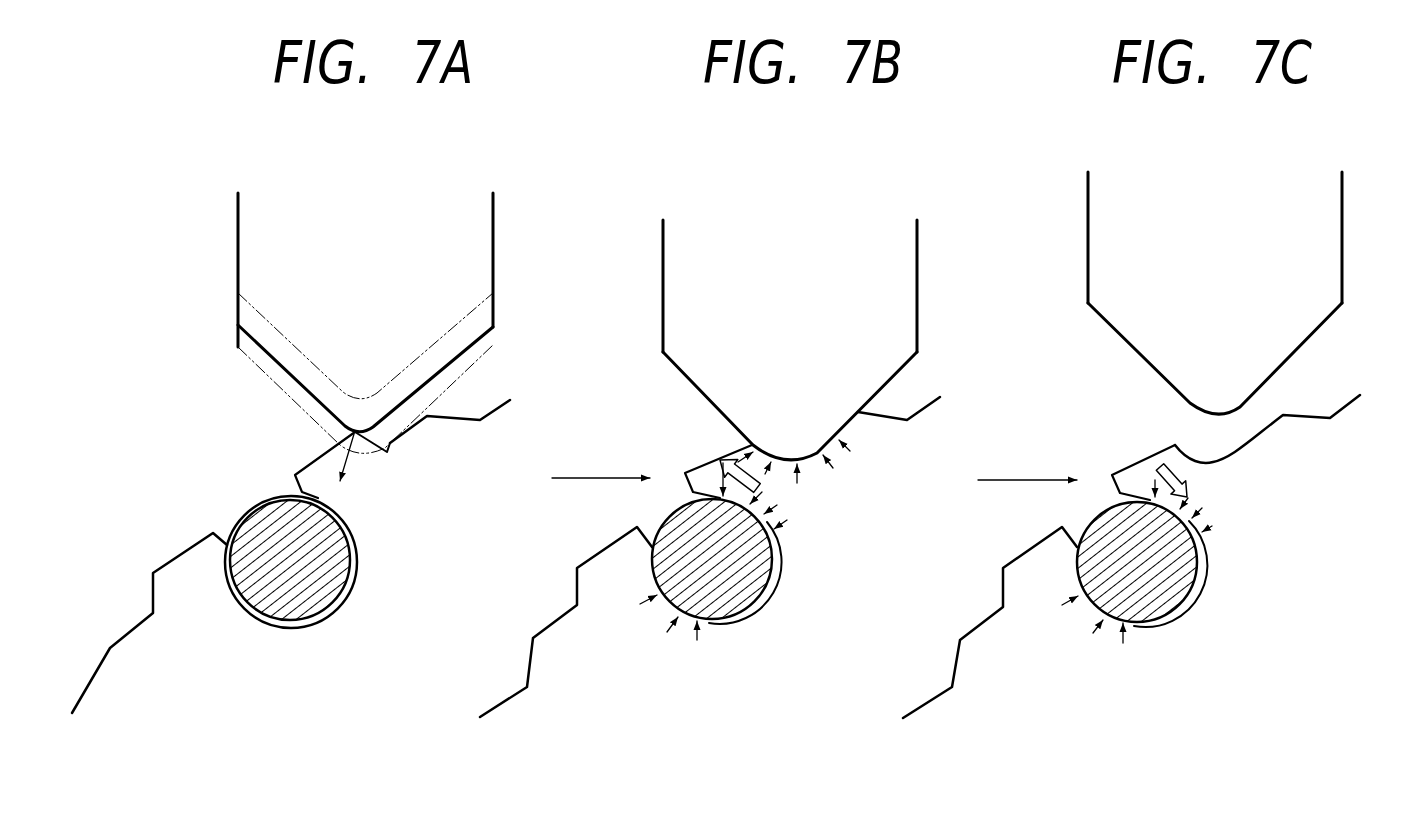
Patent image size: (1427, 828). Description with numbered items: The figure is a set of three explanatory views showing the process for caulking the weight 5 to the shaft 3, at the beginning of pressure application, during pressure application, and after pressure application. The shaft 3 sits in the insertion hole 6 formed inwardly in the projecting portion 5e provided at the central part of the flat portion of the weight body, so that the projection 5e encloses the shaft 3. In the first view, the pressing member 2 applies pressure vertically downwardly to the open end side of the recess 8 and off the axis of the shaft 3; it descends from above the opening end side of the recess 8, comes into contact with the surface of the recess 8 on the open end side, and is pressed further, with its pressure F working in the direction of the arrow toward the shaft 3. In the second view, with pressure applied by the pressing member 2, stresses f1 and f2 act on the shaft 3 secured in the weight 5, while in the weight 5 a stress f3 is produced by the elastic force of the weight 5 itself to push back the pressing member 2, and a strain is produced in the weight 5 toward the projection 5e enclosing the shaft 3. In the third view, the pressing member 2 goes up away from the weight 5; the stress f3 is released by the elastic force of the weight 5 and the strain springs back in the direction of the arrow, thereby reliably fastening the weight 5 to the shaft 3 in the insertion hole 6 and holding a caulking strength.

In FIG. 7A, the pressing member 2 is at (477, 262).
In FIG. 7B, the pressing member 2 is at (895, 257).
In FIG. 7C, the pressing member 2 is at (1322, 258).
In FIG. 7A, the shaft 3 is at (273, 597).
In FIG. 7B, the shaft 3 is at (733, 602).
In FIG. 7C, the shaft 3 is at (1158, 600).
In FIG. 7A, the weight 5 is at (142, 657).
In FIG. 7B, the weight 5 is at (560, 653).
In FIG. 7C, the weight 5 is at (988, 655).
In FIG. 7A, the projecting portion 5e is at (307, 467).
In FIG. 7B, the projecting portion 5e is at (718, 471).
In FIG. 7C, the projecting portion 5e is at (1143, 472).
In FIG. 7A, the insertion hole 6 is at (358, 570).
In FIG. 7B, the insertion hole 6 is at (745, 573).
In FIG. 7C, the insertion hole 6 is at (1170, 574).
In FIG. 7A, the recess 8 is at (390, 440).
In FIG. 7A, the pressure F is at (353, 465).
In FIG. 7B, the stress f1 is at (668, 629).
In FIG. 7C, the stress f1 is at (1092, 630).
In FIG. 7B, the stress f2 is at (783, 515).
In FIG. 7C, the stress f2 is at (1210, 517).
In FIG. 7B, the stress f3 is at (802, 464).